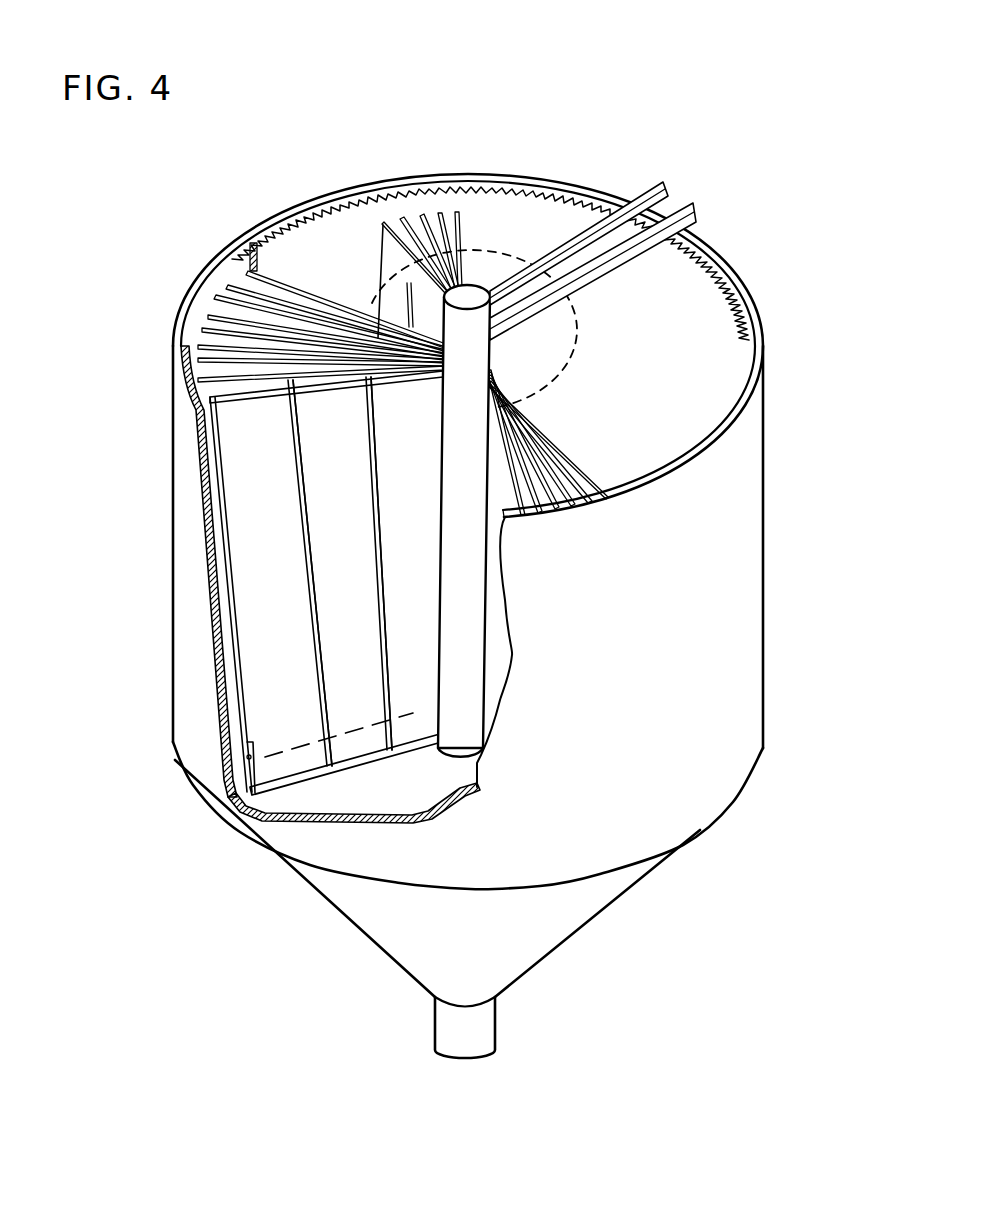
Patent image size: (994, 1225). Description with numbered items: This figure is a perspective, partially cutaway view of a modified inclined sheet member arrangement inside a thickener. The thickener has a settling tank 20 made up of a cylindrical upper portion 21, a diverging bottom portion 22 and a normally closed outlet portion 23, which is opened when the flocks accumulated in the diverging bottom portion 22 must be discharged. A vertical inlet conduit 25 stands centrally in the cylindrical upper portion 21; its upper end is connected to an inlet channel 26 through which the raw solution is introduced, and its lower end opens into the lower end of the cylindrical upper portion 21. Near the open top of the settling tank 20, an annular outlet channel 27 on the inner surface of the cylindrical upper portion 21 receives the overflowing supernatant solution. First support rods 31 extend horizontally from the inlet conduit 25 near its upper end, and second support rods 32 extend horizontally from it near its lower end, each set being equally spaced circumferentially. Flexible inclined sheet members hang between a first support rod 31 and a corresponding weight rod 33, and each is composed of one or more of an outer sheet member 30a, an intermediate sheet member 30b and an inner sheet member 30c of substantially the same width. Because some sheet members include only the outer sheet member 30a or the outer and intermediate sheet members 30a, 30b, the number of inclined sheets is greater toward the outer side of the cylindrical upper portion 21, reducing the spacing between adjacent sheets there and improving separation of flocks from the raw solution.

The settling tank 20 is at (533, 586).
The cylindrical upper portion 21 is at (765, 674).
The diverging bottom portion 22 is at (578, 918).
The outlet portion 23 is at (496, 1025).
The vertical inlet conduit 25 is at (468, 297).
The inlet channel 26 is at (660, 213).
The annular outlet channel 27 is at (333, 207).
The outer sheet member 30a is at (237, 463).
The intermediate sheet member 30b is at (330, 562).
The inner sheet member 30c is at (410, 650).
The first support rod 31 is at (198, 380).
The second support rod 32 is at (257, 746).
The weight rod 33 is at (249, 797).